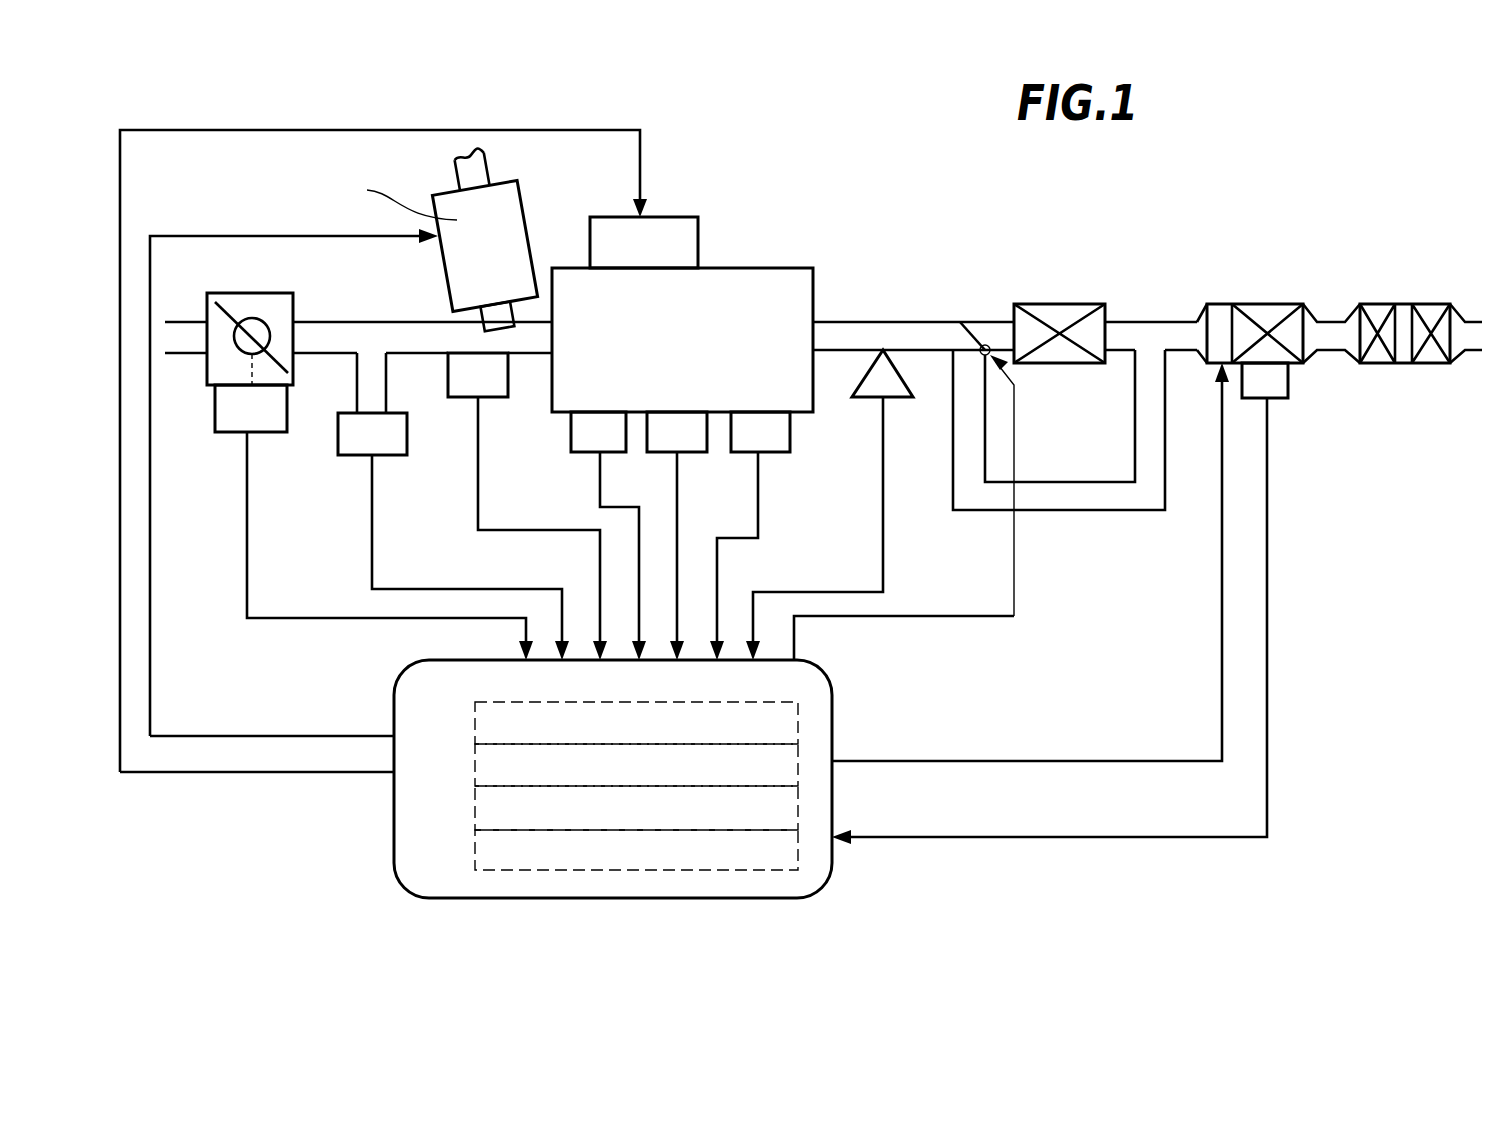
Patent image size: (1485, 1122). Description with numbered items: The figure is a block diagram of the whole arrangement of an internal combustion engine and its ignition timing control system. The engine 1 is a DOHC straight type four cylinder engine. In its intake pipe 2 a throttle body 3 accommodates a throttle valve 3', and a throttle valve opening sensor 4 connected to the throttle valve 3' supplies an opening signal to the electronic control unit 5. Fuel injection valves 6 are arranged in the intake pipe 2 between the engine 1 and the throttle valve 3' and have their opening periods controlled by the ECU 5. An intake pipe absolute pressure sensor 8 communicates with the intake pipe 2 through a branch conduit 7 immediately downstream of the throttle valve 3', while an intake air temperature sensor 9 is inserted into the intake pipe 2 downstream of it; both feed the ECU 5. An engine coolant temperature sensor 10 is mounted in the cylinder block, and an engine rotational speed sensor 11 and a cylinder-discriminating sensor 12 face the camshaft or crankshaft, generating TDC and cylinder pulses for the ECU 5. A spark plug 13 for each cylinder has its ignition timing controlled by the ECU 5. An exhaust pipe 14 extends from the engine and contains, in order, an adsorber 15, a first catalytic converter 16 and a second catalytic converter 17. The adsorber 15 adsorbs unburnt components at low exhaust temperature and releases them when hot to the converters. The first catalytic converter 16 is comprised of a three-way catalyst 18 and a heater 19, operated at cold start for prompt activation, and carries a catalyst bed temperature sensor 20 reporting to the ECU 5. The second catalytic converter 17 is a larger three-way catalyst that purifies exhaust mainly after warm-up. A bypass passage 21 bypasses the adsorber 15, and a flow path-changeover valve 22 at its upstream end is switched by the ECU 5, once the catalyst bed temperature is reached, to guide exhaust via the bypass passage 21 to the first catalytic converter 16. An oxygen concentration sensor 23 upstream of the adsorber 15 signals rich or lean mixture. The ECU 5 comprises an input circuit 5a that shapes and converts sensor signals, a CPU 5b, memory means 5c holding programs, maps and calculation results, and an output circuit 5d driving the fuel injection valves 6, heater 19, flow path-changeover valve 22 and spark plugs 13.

The engine 1 is at (790, 267).
The intake pipe 2 is at (382, 322).
The throttle body 3 is at (277, 316).
The throttle valve 3' is at (253, 310).
The throttle valve opening (θTH) sensor 4 is at (287, 430).
The electronic control unit (ECU) 5 is at (393, 802).
The input circuit 5a is at (798, 705).
The central processing unit (CPU) 5b is at (798, 760).
The memory means 5c is at (798, 820).
The output circuit 5d is at (798, 865).
The fuel injection valve 6 is at (527, 215).
The branch conduit 7 is at (385, 380).
The intake pipe absolute pressure (PBA) sensor 8 is at (408, 433).
The intake air temperature (TA) sensor 9 is at (492, 402).
The engine coolant temperature (TW) sensor 10 is at (610, 455).
The engine rotational speed (NE) sensor 11 is at (686, 455).
The cylinder-discriminating (CYL) sensor 12 is at (766, 455).
The spark plug 13 is at (700, 235).
The exhaust pipe 14 is at (830, 353).
The adsorber 15 is at (1075, 302).
The first catalytic converter 16 is at (1262, 282).
The second catalytic converter 17 is at (1404, 282).
The three-way catalyst 18 is at (1288, 300).
The heater 19 is at (1218, 300).
The catalyst bed temperature (TE) sensor 20 is at (1288, 390).
The bypass passage 21 is at (1037, 478).
The flow path-changeover valve 22 is at (983, 320).
The oxygen concentration (O2) sensor 23 is at (910, 403).